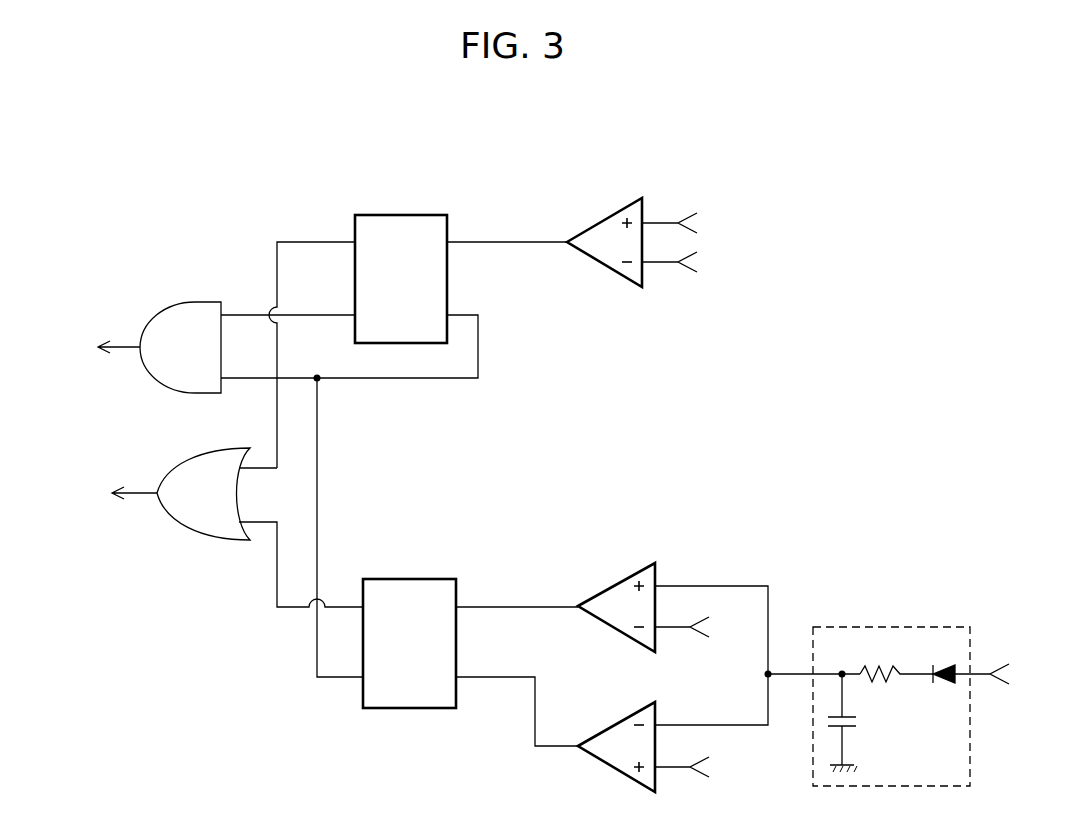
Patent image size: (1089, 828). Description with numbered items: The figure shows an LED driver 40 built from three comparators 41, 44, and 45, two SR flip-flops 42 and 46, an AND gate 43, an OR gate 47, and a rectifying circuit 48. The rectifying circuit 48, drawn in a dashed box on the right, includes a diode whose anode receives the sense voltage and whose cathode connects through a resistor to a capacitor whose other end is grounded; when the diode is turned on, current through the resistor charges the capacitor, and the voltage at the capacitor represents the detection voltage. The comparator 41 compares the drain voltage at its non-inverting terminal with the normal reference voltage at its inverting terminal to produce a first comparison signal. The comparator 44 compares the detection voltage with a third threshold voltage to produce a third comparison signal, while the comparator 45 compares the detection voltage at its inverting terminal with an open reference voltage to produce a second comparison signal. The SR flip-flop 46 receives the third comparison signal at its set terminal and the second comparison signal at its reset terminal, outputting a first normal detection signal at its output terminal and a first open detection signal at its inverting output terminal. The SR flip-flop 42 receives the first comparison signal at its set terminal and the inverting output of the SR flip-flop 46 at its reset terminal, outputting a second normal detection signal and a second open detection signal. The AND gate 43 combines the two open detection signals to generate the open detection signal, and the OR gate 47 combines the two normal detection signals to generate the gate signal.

The LED driver 40 is at (807, 156).
The comparator 41 is at (603, 222).
The SR flip-flop 42 is at (403, 214).
The AND gate 43 is at (170, 303).
The comparator 44 is at (615, 583).
The comparator 45 is at (603, 764).
The SR flip-flop 46 is at (412, 578).
The OR gate 47 is at (188, 541).
The rectifying circuit 48 is at (913, 627).